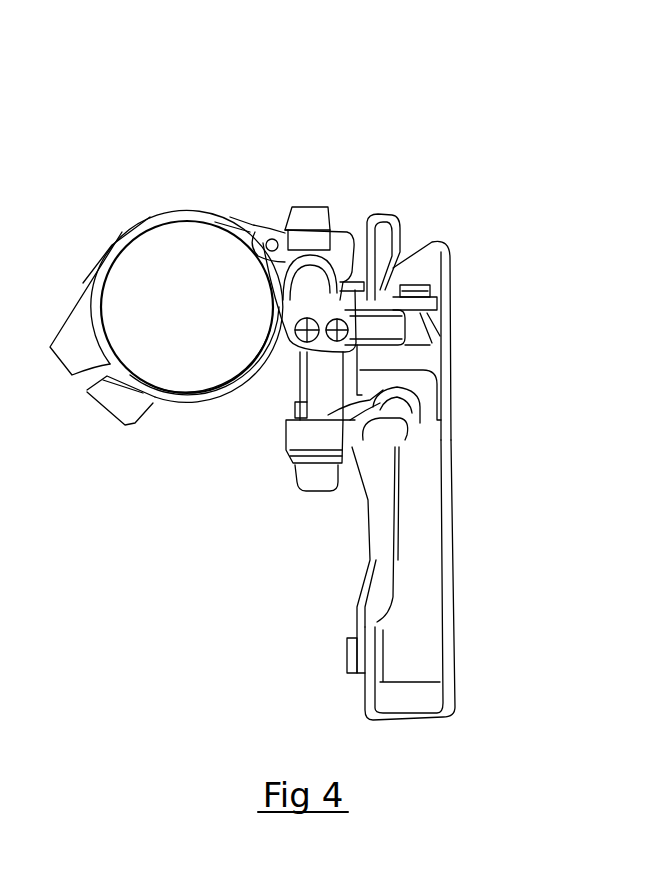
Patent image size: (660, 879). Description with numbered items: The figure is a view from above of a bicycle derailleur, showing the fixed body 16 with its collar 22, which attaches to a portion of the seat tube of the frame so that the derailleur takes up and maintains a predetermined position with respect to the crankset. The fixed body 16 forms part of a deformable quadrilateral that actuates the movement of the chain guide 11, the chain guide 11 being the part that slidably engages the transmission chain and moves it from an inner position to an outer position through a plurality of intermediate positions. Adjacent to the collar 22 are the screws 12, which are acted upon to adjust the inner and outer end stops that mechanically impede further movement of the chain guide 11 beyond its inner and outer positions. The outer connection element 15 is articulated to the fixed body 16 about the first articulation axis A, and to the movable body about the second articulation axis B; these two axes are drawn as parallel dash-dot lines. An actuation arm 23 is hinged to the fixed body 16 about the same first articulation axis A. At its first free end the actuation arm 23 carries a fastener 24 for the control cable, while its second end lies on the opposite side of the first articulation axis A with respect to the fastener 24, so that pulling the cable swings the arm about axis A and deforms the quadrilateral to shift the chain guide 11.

The chain guide 11 is at (453, 577).
The screws 12 is at (302, 318).
The outer connection element 15 is at (423, 363).
The fixed body 16 is at (312, 245).
The collar 22 is at (83, 313).
The actuation arm 23 is at (362, 423).
The fastener 24 is at (317, 470).
The first articulation axis A is at (386, 298).
The second articulation axis B is at (414, 290).